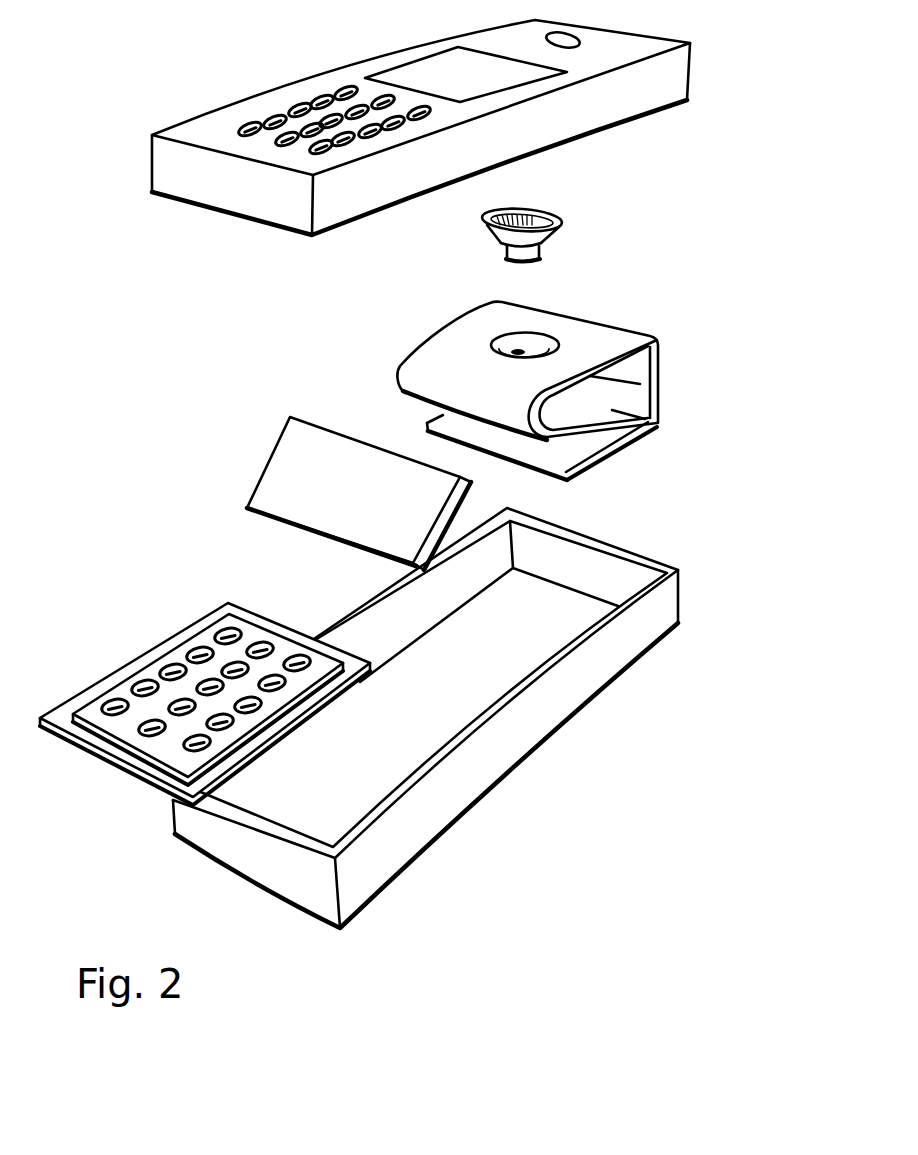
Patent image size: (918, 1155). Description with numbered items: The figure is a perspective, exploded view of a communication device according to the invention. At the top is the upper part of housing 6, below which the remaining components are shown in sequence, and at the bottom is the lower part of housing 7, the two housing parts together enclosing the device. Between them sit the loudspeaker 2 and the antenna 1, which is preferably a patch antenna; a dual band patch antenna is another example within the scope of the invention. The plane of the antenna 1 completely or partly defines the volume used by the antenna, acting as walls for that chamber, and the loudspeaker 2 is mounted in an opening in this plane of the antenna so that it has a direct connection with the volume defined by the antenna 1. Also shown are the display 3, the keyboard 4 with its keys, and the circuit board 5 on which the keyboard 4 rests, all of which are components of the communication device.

The antenna 1 is at (612, 337).
The loudspeaker 2 is at (548, 217).
The display 3 is at (295, 450).
The keyboard 4 is at (225, 627).
The circuit board 5 is at (147, 657).
The upper part of housing 6 is at (662, 87).
The lower part of housing 7 is at (650, 612).